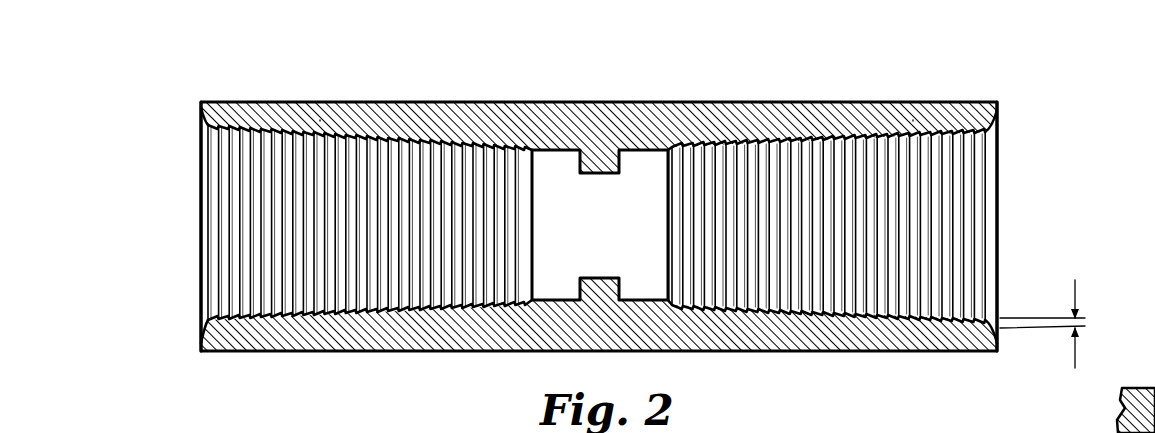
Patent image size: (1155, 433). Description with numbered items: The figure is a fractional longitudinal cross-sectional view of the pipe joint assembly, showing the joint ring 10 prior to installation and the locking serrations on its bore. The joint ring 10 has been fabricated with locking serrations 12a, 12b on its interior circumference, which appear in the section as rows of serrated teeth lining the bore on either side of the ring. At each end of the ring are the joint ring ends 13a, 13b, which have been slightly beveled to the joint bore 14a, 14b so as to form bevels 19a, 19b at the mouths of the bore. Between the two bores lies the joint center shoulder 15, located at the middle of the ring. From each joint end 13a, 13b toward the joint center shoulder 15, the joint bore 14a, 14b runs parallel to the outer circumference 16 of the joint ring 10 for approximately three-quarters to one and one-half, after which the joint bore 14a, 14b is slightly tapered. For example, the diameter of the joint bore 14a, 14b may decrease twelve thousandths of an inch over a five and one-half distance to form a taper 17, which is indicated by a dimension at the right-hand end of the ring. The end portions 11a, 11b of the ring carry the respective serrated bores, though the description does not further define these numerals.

The joint ring 10 is at (652, 70).
The first end portion 11a is at (257, 102).
The second end portion 11b is at (850, 102).
The locking serrations 12a is at (320, 120).
The locking serrations 12b is at (913, 120).
The joint ring end 13a is at (200, 112).
The joint ring end 13b is at (1010, 106).
The joint bore 14a is at (225, 254).
The joint bore 14b is at (968, 208).
The joint center shoulder 15 is at (557, 133).
The outer circumference 16 is at (760, 102).
The taper 17 is at (1075, 325).
The bevel 19a is at (201, 133).
The bevel 19b is at (1000, 140).